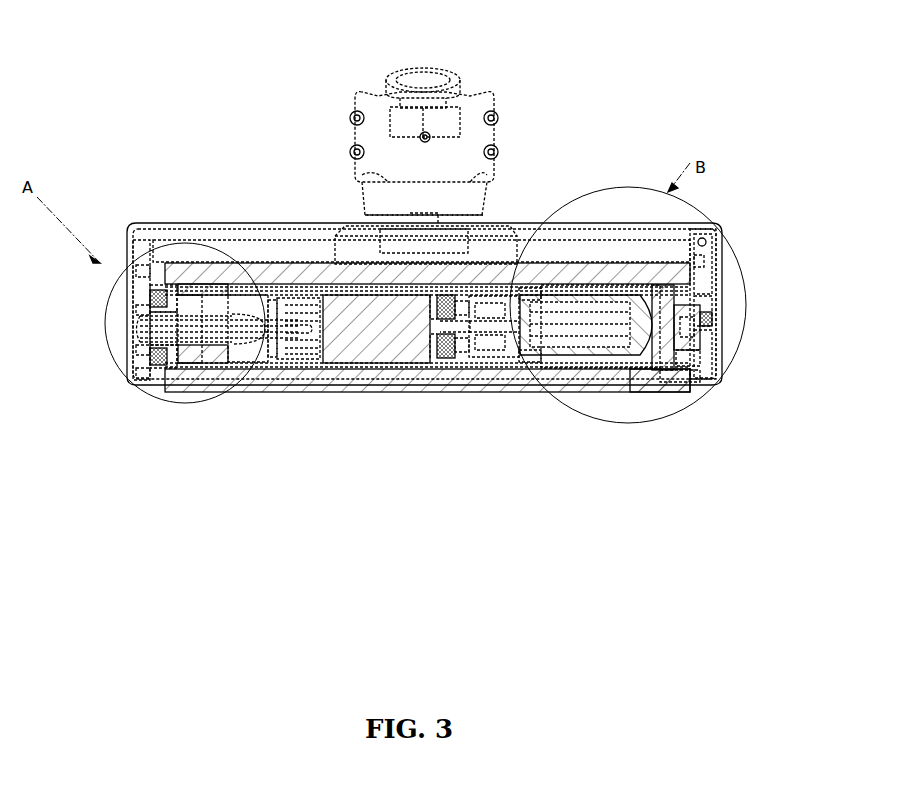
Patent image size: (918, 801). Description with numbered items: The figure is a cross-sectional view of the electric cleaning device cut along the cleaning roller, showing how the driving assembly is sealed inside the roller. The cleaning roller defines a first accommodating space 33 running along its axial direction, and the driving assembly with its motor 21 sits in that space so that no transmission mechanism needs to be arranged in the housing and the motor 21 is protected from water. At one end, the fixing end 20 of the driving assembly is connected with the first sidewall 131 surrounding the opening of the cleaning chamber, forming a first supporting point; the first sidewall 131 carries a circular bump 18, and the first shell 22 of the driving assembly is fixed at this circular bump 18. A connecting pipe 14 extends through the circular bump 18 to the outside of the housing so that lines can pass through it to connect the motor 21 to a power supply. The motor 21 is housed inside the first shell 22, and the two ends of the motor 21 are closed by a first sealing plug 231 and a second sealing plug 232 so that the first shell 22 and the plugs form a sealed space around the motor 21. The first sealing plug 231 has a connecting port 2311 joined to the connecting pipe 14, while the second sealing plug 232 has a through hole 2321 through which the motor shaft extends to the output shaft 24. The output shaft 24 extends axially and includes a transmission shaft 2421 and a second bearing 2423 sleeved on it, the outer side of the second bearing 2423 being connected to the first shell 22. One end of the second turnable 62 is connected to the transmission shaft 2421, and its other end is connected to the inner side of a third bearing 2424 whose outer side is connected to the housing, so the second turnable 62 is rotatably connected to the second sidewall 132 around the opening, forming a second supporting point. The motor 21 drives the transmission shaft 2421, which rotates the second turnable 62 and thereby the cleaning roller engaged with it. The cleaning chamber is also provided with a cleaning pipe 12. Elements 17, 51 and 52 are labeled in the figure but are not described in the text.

The cleaning pipe 12 is at (433, 83).
The head housing 17 is at (473, 140).
The first accommodating space 33 is at (282, 262).
The casing band 51 is at (165, 280).
The motor 21 is at (370, 340).
The first sidewall 131 is at (205, 300).
The connecting pipe 14 is at (150, 390).
The circular bump 18 is at (185, 390).
The fixing end 20 is at (312, 350).
The first sealing plug 231 is at (272, 365).
The connecting port 2311 is at (240, 370).
The second sealing plug 232 is at (477, 330).
The through hole 2321 is at (501, 335).
The first shell 22 is at (548, 360).
The second bearing 2423 is at (543, 290).
The output shaft 24 is at (615, 360).
The third bearing 2424 is at (706, 298).
The second sidewall 132 is at (700, 318).
The second turnable 62 is at (703, 385).
The transmission shaft 2421 is at (687, 387).
The lower casing 52 is at (660, 392).